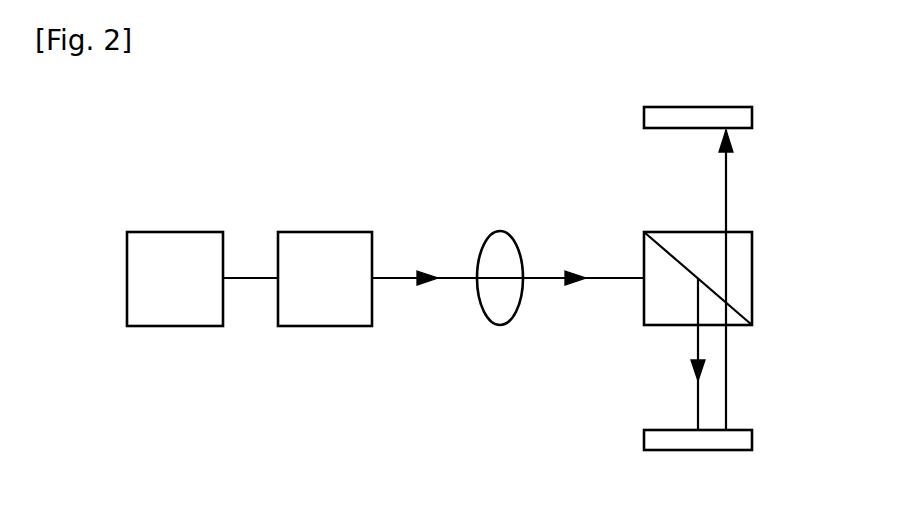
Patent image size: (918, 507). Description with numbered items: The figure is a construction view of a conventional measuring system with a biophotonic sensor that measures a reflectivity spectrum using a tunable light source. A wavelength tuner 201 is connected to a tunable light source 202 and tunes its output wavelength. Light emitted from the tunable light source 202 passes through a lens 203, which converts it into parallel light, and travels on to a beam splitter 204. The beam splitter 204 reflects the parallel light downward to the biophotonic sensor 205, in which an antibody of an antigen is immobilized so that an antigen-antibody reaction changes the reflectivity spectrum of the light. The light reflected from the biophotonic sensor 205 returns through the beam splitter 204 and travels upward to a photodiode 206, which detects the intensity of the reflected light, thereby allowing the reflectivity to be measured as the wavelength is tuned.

The wavelength tuner 201 is at (172, 232).
The tunable light source 202 is at (318, 232).
The lens 203 is at (498, 232).
The beam splitter 204 is at (752, 270).
The biophotonic sensor 205 is at (752, 435).
The photodiode 206 is at (752, 113).